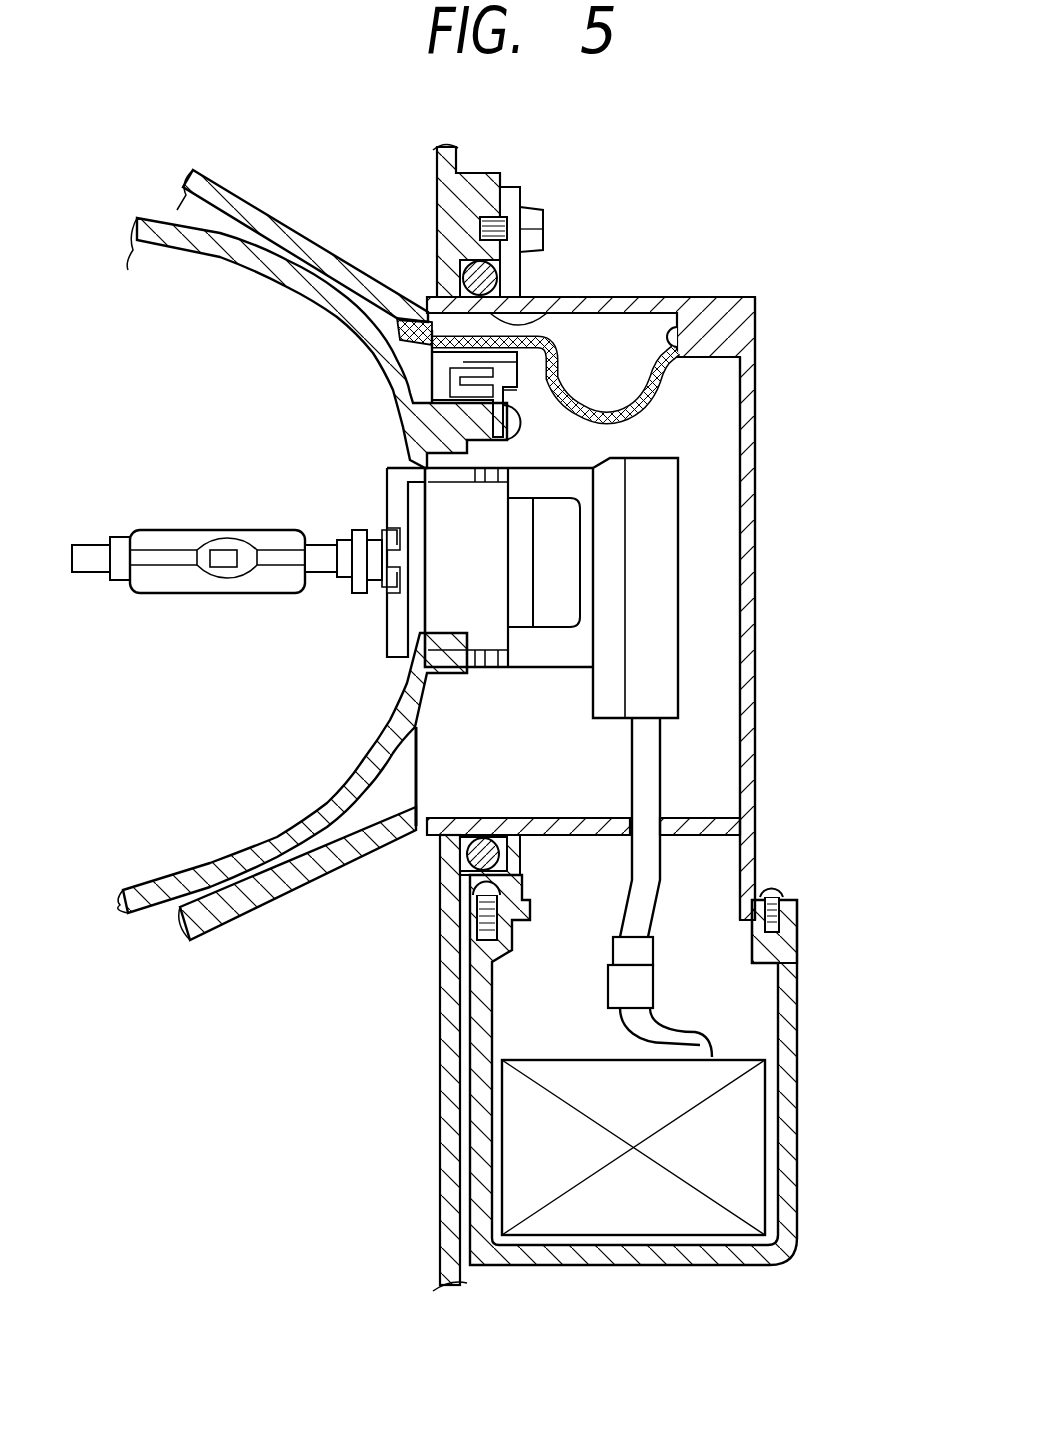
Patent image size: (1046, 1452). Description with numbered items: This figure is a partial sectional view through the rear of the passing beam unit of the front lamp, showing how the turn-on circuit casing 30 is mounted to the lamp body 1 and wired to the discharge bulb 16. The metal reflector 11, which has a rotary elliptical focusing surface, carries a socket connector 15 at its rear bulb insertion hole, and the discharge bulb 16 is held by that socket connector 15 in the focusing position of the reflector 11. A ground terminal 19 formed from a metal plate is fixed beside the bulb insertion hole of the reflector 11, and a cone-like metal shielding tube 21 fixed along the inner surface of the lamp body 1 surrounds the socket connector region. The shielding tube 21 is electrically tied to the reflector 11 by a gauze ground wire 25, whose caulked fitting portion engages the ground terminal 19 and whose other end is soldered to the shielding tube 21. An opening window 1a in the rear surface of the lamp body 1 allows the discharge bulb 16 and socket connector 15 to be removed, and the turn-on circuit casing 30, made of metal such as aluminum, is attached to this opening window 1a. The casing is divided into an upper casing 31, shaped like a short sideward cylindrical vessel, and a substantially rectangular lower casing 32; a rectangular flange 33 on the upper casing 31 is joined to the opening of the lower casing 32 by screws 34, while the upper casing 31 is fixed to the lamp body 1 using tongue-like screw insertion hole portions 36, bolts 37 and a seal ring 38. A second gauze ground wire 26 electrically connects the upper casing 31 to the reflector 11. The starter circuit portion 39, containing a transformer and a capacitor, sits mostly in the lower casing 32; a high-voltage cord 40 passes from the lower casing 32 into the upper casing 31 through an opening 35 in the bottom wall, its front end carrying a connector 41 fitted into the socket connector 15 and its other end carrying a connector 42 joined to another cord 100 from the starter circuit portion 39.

The lamp body 1 is at (440, 1213).
The opening window 1a is at (438, 832).
The reflector 11 is at (200, 863).
The socket connector 15 is at (447, 533).
The discharge bulb 16 is at (165, 550).
The ground terminal 19 is at (512, 405).
The shielding tube 21 is at (240, 915).
The ground wire 25 is at (415, 345).
The ground wire 26 is at (663, 397).
The turn-on circuit casing 30 is at (657, 288).
The upper casing 31 is at (755, 527).
The lower casing 32 is at (795, 1148).
The rectangular flange 33 is at (797, 908).
The screws 34 is at (780, 892).
The opening 35 is at (670, 820).
The screw insertion hole portions 36 is at (505, 215).
The bolts 37 is at (543, 212).
The seal ring 38 is at (547, 320).
The starter circuit portion 39 is at (693, 1222).
The cord 40 is at (648, 753).
The connector 41 is at (667, 627).
The connector 42 is at (650, 988).
The cord 100 is at (700, 1045).